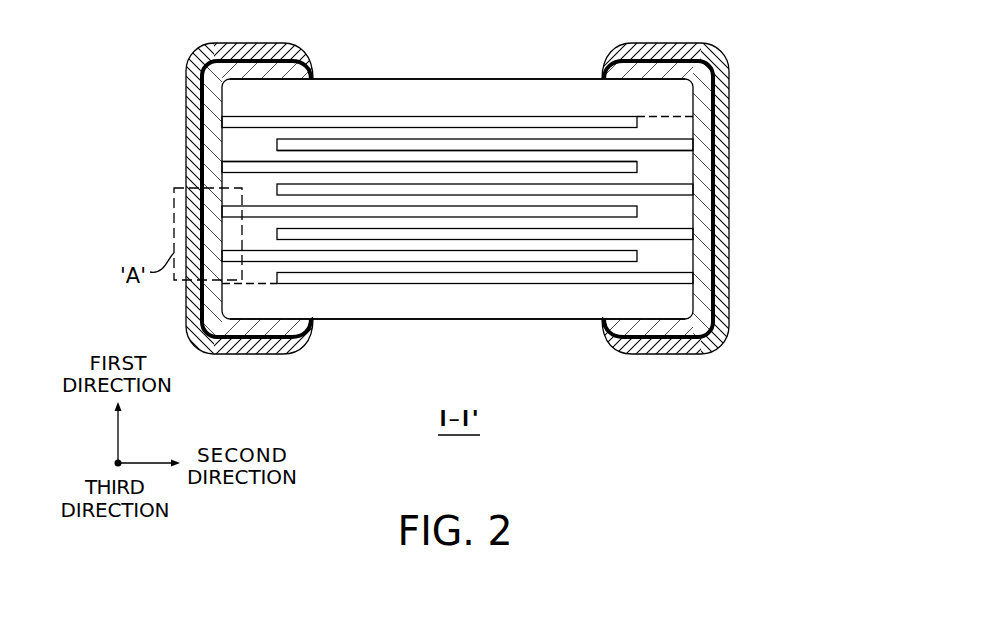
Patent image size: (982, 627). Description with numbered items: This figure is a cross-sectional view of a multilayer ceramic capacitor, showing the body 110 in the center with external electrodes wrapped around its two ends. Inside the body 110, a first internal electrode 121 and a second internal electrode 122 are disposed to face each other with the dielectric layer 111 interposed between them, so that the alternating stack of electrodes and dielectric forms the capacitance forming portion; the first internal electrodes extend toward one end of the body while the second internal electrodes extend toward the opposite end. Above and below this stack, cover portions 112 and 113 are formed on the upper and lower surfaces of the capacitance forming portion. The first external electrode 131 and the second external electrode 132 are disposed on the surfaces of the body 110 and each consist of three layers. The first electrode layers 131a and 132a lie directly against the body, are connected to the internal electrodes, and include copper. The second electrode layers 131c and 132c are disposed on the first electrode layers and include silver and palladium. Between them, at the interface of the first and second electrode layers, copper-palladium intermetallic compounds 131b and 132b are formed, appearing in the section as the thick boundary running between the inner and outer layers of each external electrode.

The body 110 is at (392, 79).
The dielectric layer 111 is at (343, 155).
The cover portion 112 is at (472, 95).
The cover portion 113 is at (472, 298).
The first internal electrode 121 is at (527, 120).
The second internal electrode 122 is at (582, 138).
The first external electrode 131 is at (180, 200).
The first electrode layer 131a is at (190, 130).
The copper-palladium intermetallic compound 131b is at (203, 158).
The second electrode layer 131c is at (216, 193).
The second external electrode 132 is at (738, 200).
The first electrode layer 132a is at (700, 212).
The copper-palladium intermetallic compound 132b is at (715, 238).
The second electrode layer 132c is at (722, 271).